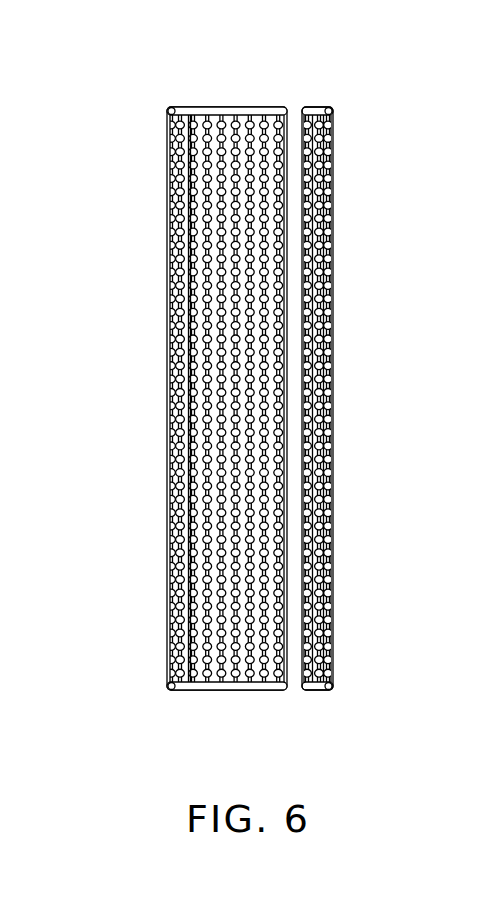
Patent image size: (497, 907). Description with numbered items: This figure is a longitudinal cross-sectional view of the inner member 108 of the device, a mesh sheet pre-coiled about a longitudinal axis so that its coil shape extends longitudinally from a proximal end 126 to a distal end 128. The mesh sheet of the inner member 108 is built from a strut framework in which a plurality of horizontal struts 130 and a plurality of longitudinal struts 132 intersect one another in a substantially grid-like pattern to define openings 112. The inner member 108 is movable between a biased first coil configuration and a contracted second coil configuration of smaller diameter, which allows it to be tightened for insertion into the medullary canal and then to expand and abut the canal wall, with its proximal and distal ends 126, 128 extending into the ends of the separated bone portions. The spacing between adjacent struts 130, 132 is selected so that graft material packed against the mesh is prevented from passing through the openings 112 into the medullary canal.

The inner member 108 is at (176, 94).
The openings 112 is at (222, 263).
The proximal end 126 is at (157, 129).
The distal end 128 is at (157, 662).
The horizontal struts 130 is at (223, 343).
The longitudinal struts 132 is at (203, 463).